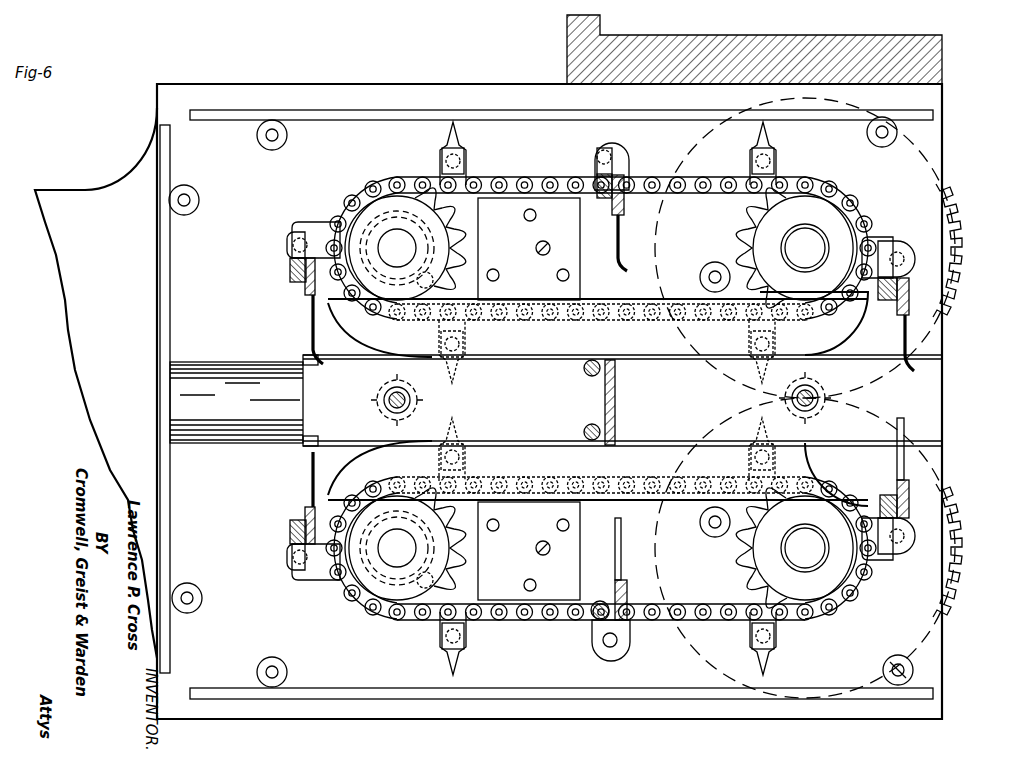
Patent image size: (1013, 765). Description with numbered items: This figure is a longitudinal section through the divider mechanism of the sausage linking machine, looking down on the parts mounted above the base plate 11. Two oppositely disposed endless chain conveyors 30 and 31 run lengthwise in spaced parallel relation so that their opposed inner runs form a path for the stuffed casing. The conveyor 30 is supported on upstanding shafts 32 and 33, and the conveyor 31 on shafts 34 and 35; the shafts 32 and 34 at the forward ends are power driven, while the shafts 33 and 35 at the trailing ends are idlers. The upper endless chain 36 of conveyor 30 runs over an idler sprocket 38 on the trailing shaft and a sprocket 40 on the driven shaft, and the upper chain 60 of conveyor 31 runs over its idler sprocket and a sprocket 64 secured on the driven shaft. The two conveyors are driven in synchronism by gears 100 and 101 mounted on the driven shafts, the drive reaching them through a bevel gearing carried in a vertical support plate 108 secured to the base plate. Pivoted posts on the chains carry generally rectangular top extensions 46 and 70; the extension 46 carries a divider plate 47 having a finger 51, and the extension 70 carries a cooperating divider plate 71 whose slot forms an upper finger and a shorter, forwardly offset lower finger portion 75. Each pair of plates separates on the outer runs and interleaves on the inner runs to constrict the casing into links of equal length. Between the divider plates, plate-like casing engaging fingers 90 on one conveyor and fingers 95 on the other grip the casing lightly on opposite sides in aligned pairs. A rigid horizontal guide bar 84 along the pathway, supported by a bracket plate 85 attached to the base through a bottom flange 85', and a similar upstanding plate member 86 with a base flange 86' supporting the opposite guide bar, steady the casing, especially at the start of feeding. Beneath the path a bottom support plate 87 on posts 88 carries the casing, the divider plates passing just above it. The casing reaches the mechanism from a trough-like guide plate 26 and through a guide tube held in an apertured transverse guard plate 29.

The base plate 11 is at (467, 712).
The guide plate 26 is at (211, 372).
The guard plate 29 is at (170, 291).
The endless chain conveyor 30 is at (333, 596).
The endless chain conveyor 31 is at (351, 192).
The shaft 32 is at (811, 539).
The shaft 33 is at (403, 563).
The shaft 34 is at (806, 237).
The shaft 35 is at (402, 237).
The upper endless chain 36 is at (749, 558).
The idler sprocket 38 is at (363, 594).
The sprocket 40 is at (853, 601).
The top extension 46 is at (890, 555).
The divider plate 47 is at (604, 410).
The finger 51 is at (905, 420).
The upper chain 60 is at (386, 180).
The sprocket 64 is at (748, 236).
The plate extension 70 is at (893, 243).
The divider plate 71 is at (616, 388).
The lower finger portion 75 is at (902, 345).
The guide bar 84 is at (845, 465).
The bracket plate 85 is at (544, 551).
The bottom flange 85' is at (549, 555).
The upstanding plate member 86 is at (543, 249).
The base flange 86' is at (548, 245).
The bottom support plate 87 is at (312, 442).
The posts 88 is at (384, 400).
The casing engaging fingers 90 is at (775, 660).
The casing engaging fingers 95 is at (768, 366).
The gear 100 is at (946, 546).
The gear 101 is at (946, 234).
The support plate 108 is at (842, 41).